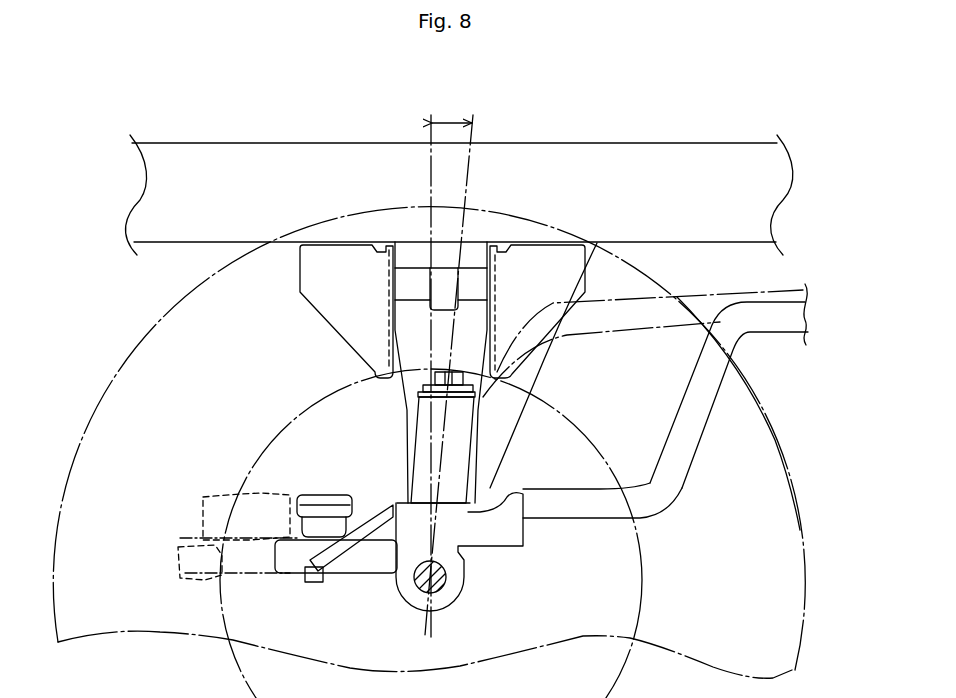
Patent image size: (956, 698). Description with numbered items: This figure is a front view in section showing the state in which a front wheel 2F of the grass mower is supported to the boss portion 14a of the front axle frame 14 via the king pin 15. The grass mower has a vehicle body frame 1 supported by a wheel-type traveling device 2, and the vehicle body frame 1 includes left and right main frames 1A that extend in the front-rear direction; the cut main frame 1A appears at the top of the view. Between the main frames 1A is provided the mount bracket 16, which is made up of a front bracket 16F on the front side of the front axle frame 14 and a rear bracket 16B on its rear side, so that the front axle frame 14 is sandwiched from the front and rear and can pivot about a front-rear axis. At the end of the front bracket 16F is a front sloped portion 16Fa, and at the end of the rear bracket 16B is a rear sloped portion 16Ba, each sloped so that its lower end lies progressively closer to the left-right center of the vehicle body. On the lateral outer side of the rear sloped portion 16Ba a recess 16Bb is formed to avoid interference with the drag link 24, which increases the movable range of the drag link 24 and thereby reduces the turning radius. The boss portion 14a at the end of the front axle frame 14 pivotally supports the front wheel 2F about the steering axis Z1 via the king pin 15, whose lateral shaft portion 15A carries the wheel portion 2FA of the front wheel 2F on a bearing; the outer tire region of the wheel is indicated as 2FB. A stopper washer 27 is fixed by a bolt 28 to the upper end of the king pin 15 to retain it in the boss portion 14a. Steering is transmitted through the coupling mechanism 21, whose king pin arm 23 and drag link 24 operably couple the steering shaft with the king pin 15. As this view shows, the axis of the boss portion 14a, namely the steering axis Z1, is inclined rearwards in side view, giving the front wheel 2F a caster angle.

The vehicle body frame 1 is at (458, 184).
The main frame 1A is at (664, 150).
The traveling device 2 is at (429, 443).
The front wheel 2F is at (118, 357).
The wheel portion 2FA is at (642, 558).
The front wheel outer portion 2FB is at (782, 452).
The steering axis Z1 is at (467, 190).
The front axle frame 14 is at (396, 332).
The boss portion 14a is at (420, 442).
The king pin 15 is at (478, 558).
The lateral shaft portion 15A is at (440, 585).
The mount bracket 16 is at (372, 186).
The front bracket 16F is at (299, 252).
The front sloped portion 16Fa is at (302, 296).
The rear bracket 16B is at (489, 262).
The rear sloped portion 16Ba is at (560, 258).
The recess 16Bb is at (557, 275).
The coupling mechanism 21 is at (678, 493).
The king pin arm 23 is at (180, 547).
The drag link 24 is at (720, 292).
The stopper washer 27 is at (423, 390).
The bolt 28 is at (483, 385).